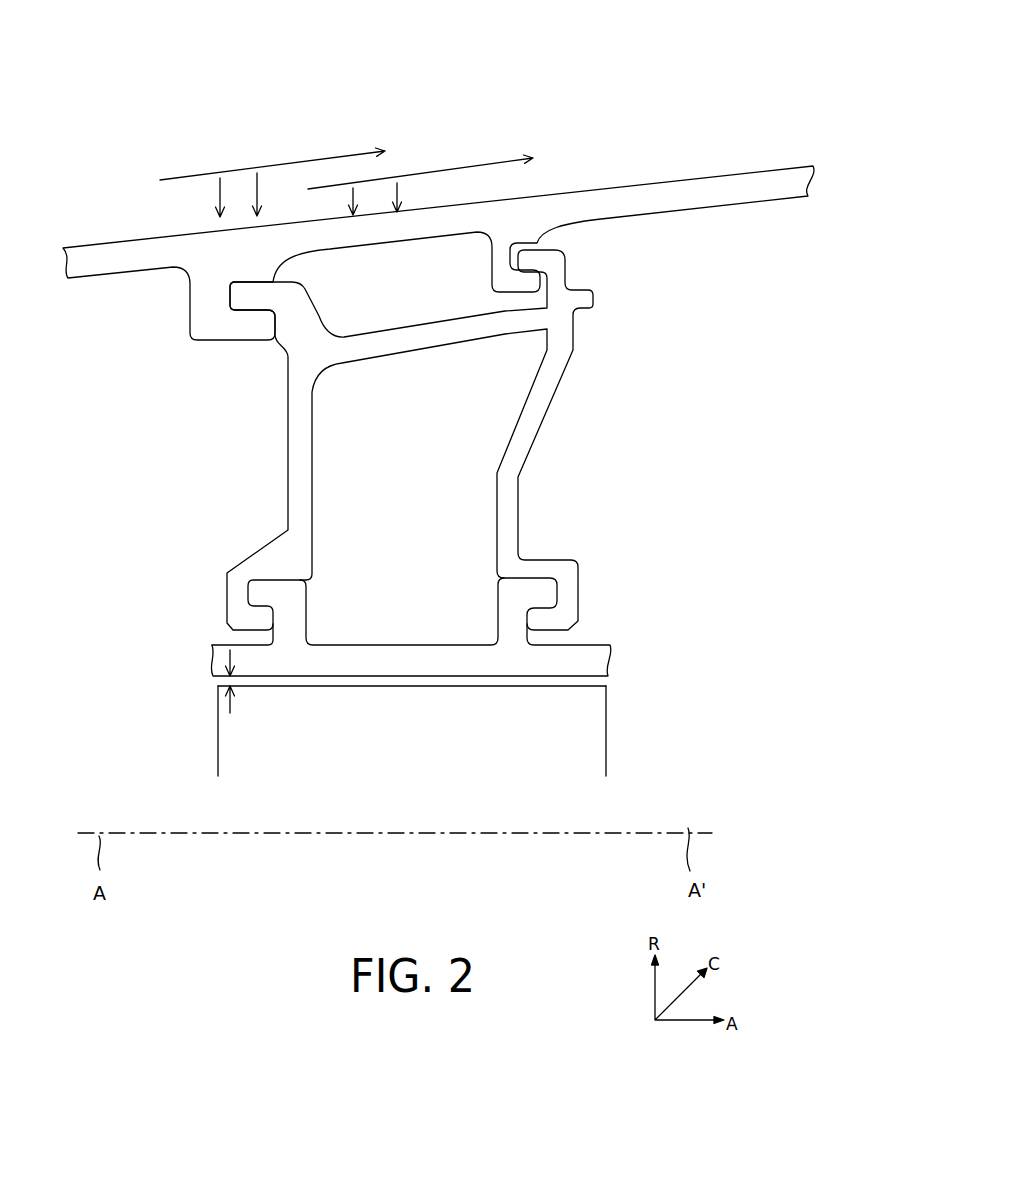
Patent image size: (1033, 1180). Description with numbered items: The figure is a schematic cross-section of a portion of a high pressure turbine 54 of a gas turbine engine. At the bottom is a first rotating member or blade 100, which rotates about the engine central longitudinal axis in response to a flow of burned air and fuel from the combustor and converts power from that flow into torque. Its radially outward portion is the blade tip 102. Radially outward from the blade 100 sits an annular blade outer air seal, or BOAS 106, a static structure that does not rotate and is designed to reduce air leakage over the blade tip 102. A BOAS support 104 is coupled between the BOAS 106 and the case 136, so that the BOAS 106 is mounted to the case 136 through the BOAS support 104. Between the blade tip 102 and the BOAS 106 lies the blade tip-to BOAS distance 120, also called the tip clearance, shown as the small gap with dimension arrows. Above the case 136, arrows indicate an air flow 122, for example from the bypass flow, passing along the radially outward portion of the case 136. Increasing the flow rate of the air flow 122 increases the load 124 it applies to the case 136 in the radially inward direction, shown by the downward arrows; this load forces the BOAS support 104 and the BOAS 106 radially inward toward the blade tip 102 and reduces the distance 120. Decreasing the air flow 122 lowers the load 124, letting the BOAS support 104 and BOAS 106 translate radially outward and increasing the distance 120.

The high pressure turbine 54 is at (134, 79).
The case 136 is at (655, 184).
The BOAS support 104 is at (557, 384).
The blade outer air seal 106 is at (603, 652).
The blade tip 102 is at (597, 687).
The blade 100 is at (565, 760).
The blade tip-to BOAS distance 120 is at (228, 705).
The air flow 122 is at (328, 174).
The load 124 is at (220, 191).